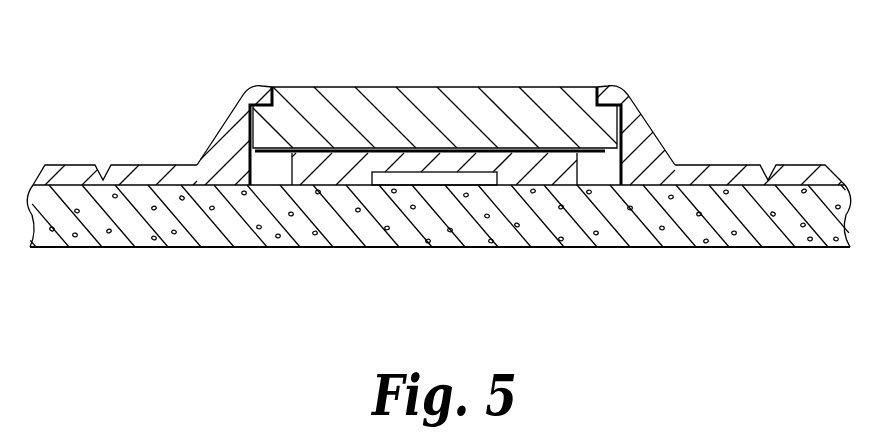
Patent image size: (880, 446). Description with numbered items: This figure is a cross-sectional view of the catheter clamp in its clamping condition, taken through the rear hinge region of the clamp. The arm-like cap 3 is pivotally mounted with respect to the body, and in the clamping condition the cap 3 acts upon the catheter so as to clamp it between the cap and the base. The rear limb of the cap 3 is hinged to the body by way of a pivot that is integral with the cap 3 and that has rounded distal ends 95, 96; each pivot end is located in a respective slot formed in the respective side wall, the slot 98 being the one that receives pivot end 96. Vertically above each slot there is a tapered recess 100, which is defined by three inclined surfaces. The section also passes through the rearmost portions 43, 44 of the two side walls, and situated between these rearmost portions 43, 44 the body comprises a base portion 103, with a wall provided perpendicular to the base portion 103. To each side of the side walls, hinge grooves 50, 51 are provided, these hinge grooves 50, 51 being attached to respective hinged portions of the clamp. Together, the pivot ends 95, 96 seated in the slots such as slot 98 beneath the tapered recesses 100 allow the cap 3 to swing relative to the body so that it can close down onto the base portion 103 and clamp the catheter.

The cap 3 is at (454, 204).
The rearmost portion of side wall 43 is at (658, 112).
The rearmost portion of side wall 44 is at (254, 108).
The hinge groove 50 is at (763, 165).
The hinge groove 51 is at (101, 164).
The rounded distal end of pivot 95 is at (623, 113).
The rounded distal end of pivot 96 is at (252, 150).
The slot 98 is at (607, 140).
The tapered recess 100 is at (261, 104).
The base portion 103 is at (550, 172).